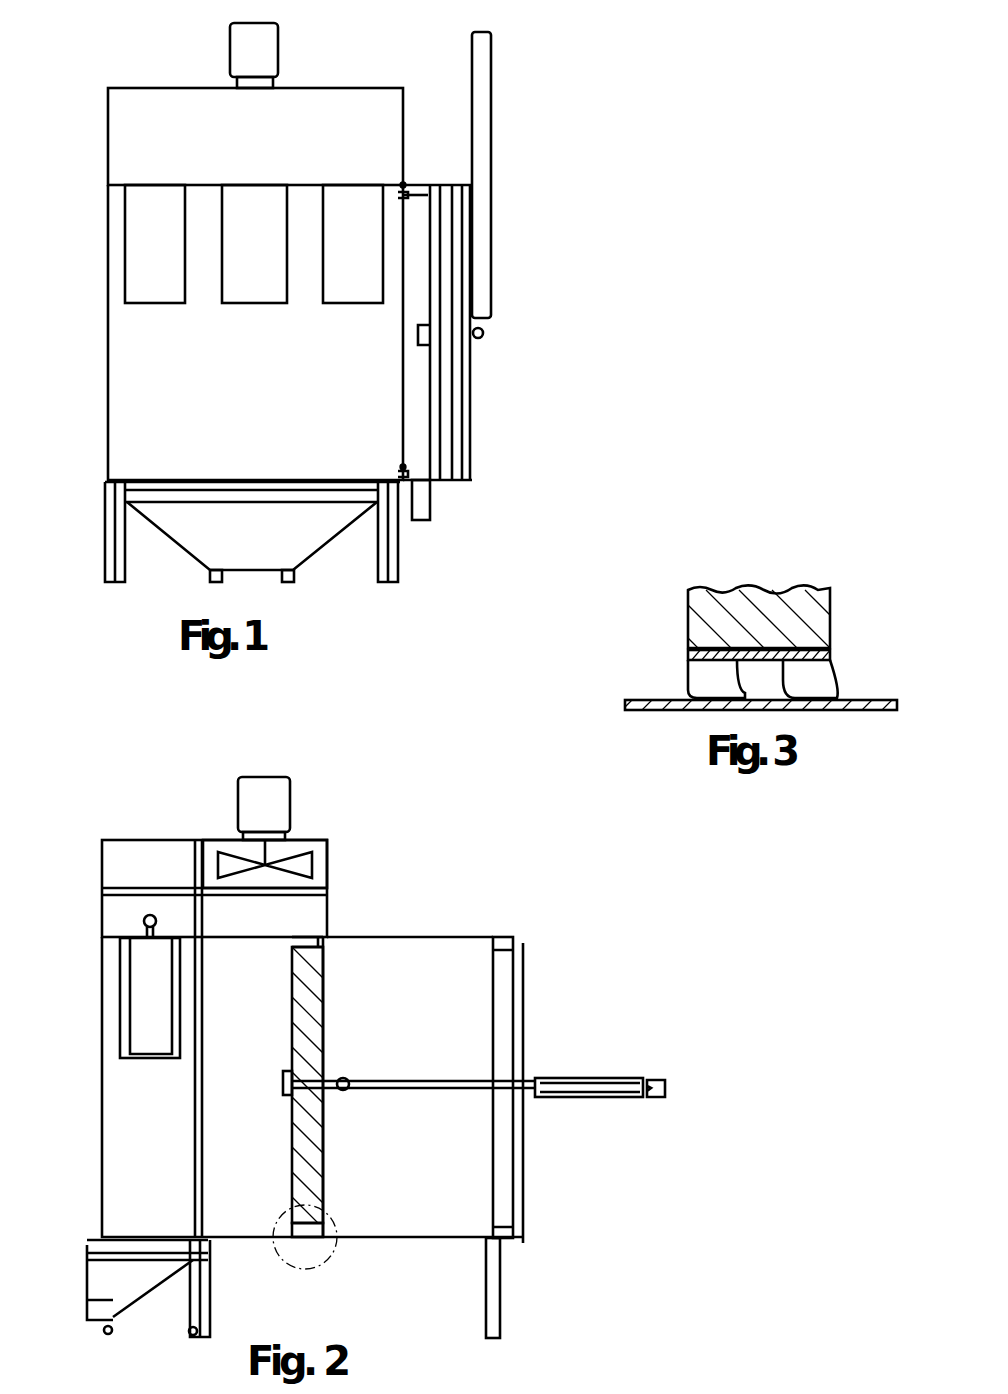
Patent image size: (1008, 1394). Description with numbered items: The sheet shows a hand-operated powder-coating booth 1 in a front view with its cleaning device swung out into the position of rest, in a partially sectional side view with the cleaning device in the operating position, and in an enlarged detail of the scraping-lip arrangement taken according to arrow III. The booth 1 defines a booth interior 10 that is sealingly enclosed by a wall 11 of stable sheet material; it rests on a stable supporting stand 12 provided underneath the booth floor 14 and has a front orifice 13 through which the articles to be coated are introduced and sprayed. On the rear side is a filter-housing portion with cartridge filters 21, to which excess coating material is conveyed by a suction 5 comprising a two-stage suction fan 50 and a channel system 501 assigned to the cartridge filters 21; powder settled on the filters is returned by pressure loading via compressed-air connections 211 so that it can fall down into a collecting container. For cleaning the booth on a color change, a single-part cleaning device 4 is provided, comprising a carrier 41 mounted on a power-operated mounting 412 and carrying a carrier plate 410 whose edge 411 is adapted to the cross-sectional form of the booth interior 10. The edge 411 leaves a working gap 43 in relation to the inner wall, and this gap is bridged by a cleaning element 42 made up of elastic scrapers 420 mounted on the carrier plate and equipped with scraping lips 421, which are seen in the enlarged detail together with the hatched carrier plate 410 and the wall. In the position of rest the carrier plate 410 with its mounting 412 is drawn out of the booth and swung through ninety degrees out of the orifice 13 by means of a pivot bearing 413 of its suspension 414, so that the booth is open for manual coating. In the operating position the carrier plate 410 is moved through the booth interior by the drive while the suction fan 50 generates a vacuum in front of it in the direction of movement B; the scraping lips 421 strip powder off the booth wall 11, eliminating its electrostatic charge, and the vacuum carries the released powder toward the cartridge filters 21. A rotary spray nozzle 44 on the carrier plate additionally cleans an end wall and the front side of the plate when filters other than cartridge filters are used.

In FIG. 1, the booth 1 is at (543, 17).
In FIG. 1, the booth interior 10 is at (125, 428).
In FIG. 2, the booth interior 10 is at (309, 1089).
In FIG. 1, the wall 11 is at (108, 314).
In FIG. 2, the wall 11 is at (424, 1032).
In FIG. 1, the supporting stand 12 is at (396, 545).
In FIG. 2, the front orifice 13 is at (496, 1018).
In FIG. 2, the booth floor 14 is at (413, 1237).
In FIG. 2, the cartridge filter 21 is at (123, 1010).
In FIG. 2, the compressed-air connection 211 is at (148, 914).
In FIG. 1, the cleaning device 4 is at (470, 463).
In FIG. 3, the carrier 41 is at (730, 600).
In FIG. 1, the carrier plate 410 is at (440, 480).
In FIG. 3, the carrier plate 410 is at (757, 622).
In FIG. 2, the carrier plate 410 is at (315, 1158).
In FIG. 3, the edge 411 is at (795, 655).
In FIG. 2, the mounting 412 is at (333, 1080).
In FIG. 1, the pivot bearing 413 is at (405, 184).
In FIG. 2, the suspension 414 is at (524, 947).
In FIG. 2, the cleaning element 42 is at (318, 942).
In FIG. 3, the elastic scraper 420 is at (695, 672).
In FIG. 3, the scraping lip 421 is at (695, 690).
In FIG. 3, the working gap 43 is at (852, 647).
In FIG. 2, the working gap 43 is at (286, 943).
In FIG. 2, the rotary spray nozzle 44 is at (285, 1085).
In FIG. 2, the suction 5 is at (305, 812).
In FIG. 2, the suction fan 50 is at (243, 800).
In FIG. 2, the channel system 501 is at (212, 913).
In FIG. 2, the arrow III is at (335, 1265).
In FIG. 2, the direction of movement B is at (273, 1038).